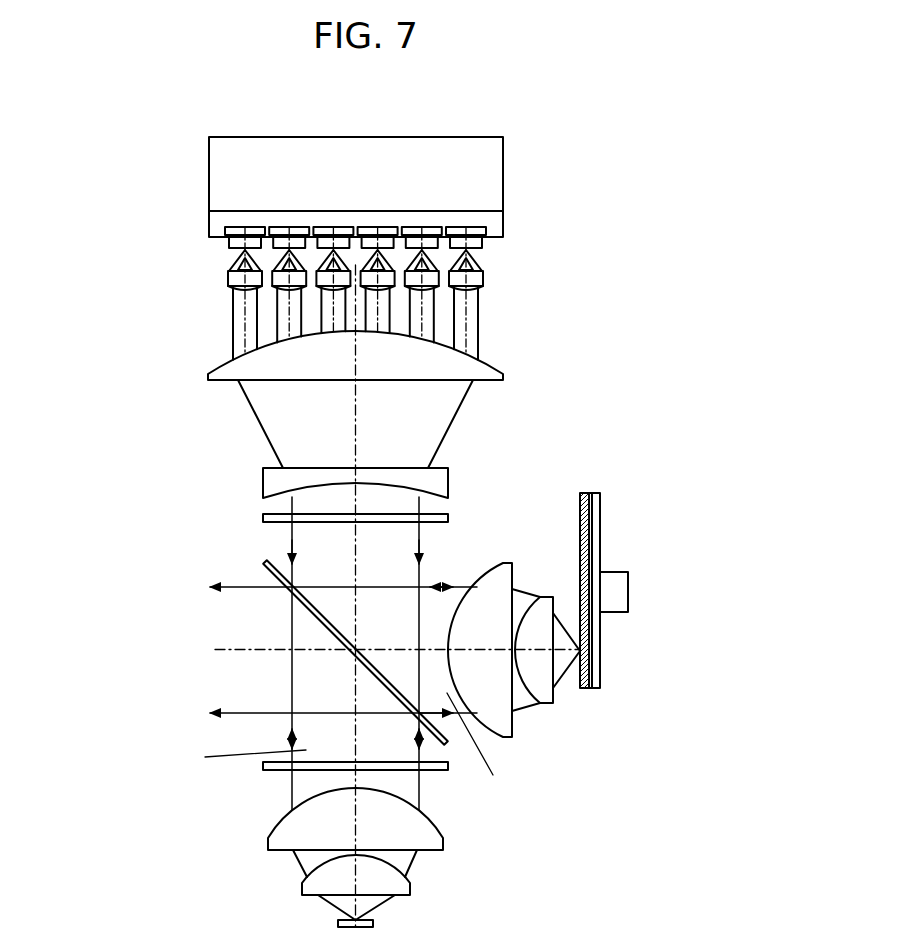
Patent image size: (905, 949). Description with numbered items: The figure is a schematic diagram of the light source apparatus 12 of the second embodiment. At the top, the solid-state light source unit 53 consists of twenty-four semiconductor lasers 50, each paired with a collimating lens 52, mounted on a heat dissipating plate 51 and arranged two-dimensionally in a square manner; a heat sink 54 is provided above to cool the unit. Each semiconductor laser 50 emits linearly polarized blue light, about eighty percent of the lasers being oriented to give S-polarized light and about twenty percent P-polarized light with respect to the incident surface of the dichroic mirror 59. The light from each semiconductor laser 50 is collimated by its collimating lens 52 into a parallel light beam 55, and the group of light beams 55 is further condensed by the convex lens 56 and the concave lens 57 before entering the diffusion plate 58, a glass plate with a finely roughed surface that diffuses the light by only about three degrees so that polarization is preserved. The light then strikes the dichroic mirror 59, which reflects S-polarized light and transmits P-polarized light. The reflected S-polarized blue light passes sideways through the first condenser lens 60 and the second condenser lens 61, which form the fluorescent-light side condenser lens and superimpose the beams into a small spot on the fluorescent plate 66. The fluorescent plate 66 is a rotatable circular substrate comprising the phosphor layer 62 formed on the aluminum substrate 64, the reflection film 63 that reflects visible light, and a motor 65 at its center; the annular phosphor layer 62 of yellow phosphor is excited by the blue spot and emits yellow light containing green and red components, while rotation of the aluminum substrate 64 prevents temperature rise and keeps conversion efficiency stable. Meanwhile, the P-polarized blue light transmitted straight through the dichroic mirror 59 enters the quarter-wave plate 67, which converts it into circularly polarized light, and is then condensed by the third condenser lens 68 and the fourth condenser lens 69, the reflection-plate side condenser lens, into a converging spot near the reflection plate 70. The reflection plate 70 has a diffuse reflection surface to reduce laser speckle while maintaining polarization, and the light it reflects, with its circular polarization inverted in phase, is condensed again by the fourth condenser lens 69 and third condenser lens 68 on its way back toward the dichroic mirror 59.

The light source apparatus 12 is at (82, 178).
The semiconductor laser 50 is at (480, 241).
The heat dissipating plate 51 is at (492, 218).
The collimating lens 52 is at (393, 296).
The solid-state light source unit 53 is at (420, 272).
The heat sink 54 is at (485, 177).
The parallel light beam 55 is at (232, 324).
The convex lens 56 is at (210, 376).
The concave lens 57 is at (263, 478).
The diffusion plate 58 is at (263, 515).
The dichroic mirror 59 is at (263, 562).
The first condenser lens 60 is at (503, 563).
The second condenser lens 61 is at (545, 597).
The phosphor layer 62 is at (588, 687).
The reflection film 63 is at (591, 676).
The aluminum substrate 64 is at (594, 625).
The motor 65 is at (642, 592).
The fluorescent plate 66 is at (663, 619).
The quarter-wave plate 67 is at (448, 772).
The third condenser lens 68 is at (278, 835).
The fourth condenser lens 69 is at (305, 882).
The reflection plate 70 is at (375, 922).